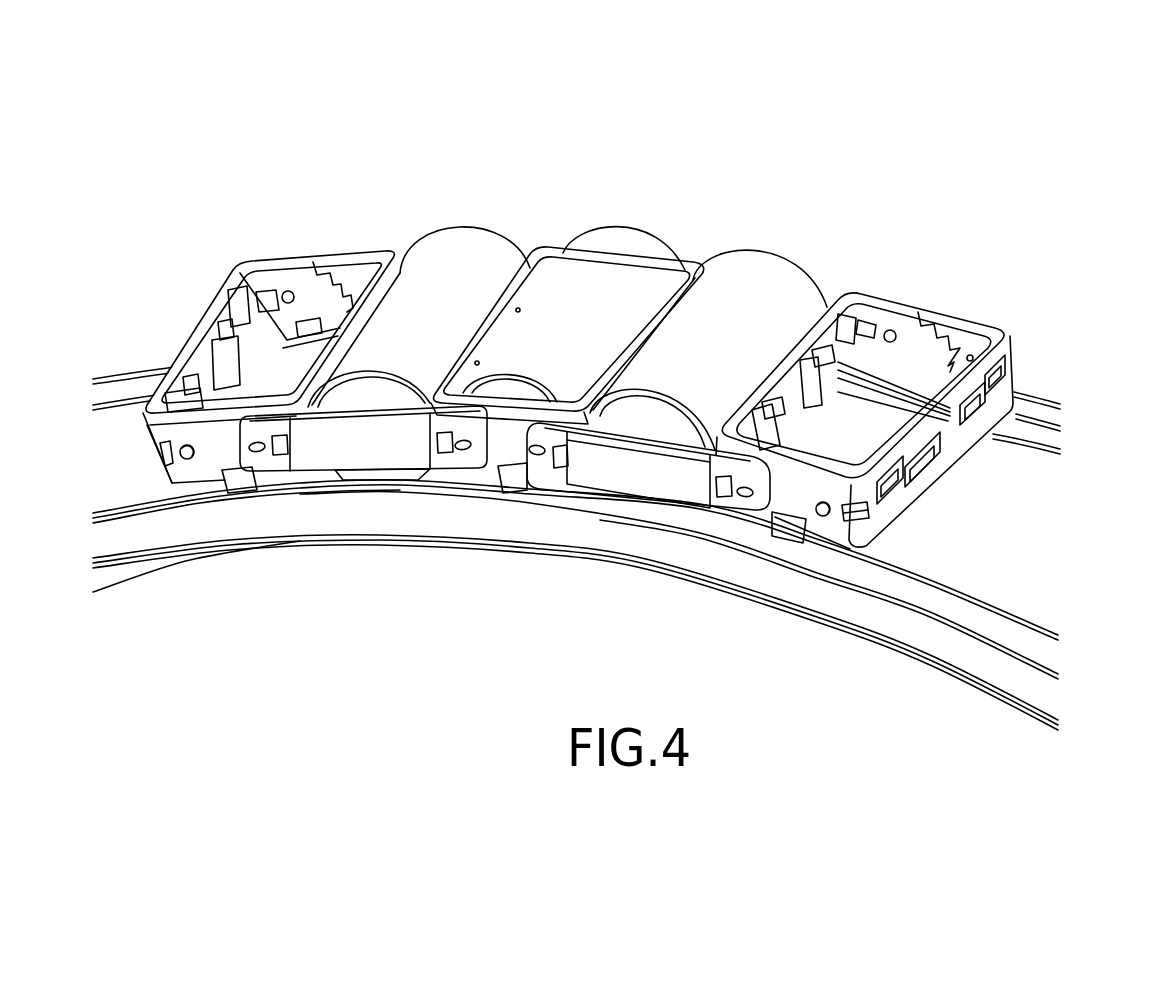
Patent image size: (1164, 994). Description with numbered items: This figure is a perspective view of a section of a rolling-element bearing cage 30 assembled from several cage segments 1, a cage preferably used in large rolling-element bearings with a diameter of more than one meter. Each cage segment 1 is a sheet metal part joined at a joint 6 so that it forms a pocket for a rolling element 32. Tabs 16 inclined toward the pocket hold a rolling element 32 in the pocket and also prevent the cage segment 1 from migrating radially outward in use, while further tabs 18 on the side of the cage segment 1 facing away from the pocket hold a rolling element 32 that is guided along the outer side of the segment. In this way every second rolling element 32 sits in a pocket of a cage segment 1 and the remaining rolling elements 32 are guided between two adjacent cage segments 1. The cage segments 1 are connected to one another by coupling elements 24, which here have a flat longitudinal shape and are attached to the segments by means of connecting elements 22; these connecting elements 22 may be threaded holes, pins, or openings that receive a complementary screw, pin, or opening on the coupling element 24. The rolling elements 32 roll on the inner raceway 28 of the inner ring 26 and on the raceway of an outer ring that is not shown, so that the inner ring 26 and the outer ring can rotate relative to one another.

The cage segment 1 is at (352, 248).
The joint 6 is at (315, 257).
The tabs 16 is at (814, 357).
The further tabs 18 is at (1005, 375).
The connecting elements 22 is at (257, 455).
The coupling elements 24 is at (358, 455).
The inner ring 26 is at (962, 666).
The inner raceway 28 is at (1063, 596).
The rolling-element bearing cage 30 is at (887, 157).
The rolling element 32 is at (463, 243).